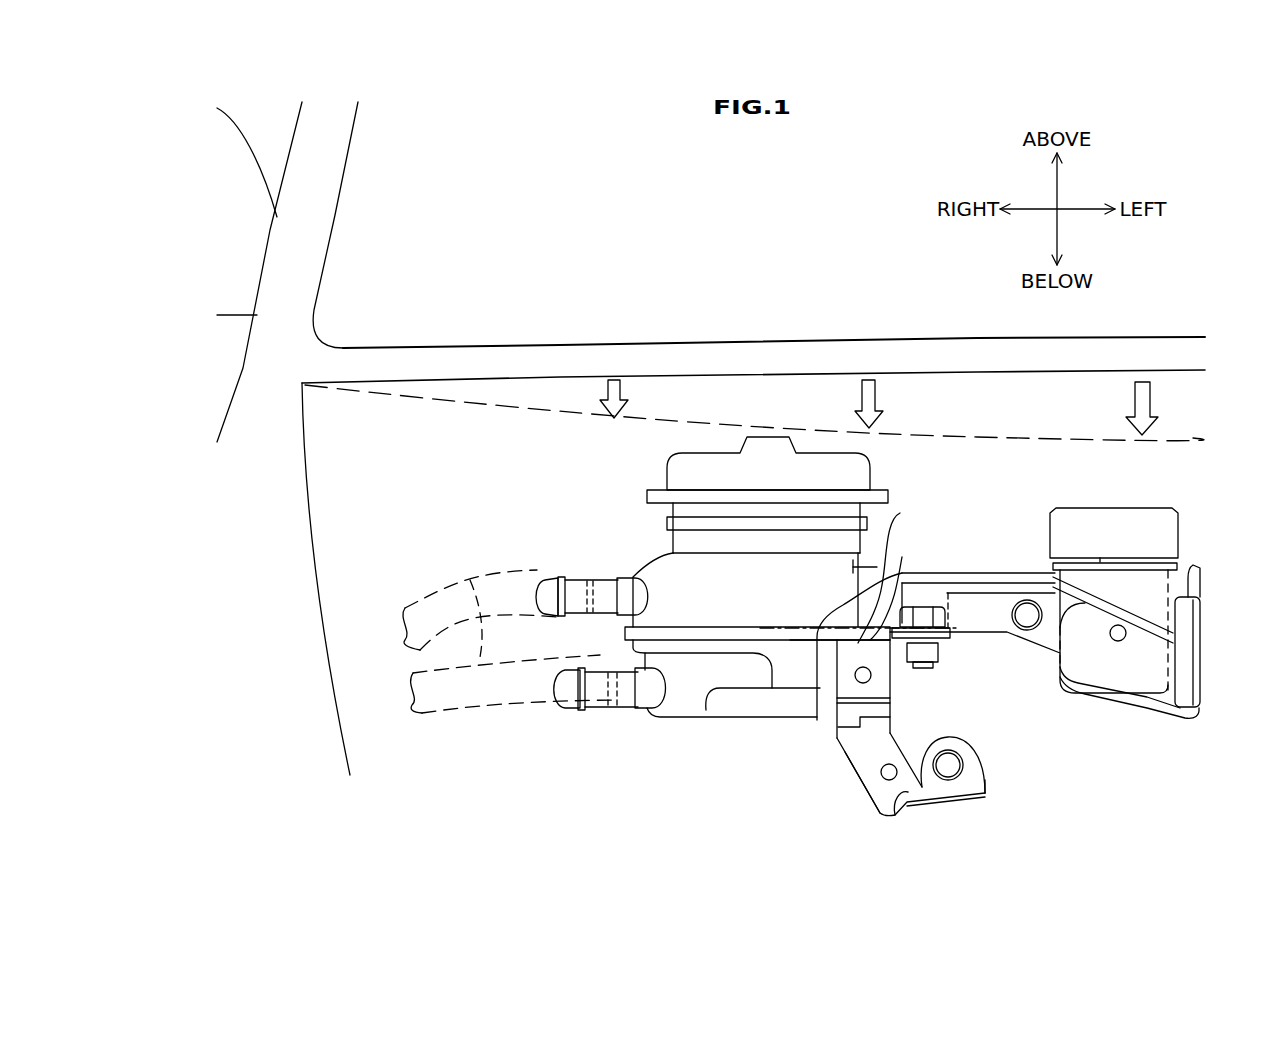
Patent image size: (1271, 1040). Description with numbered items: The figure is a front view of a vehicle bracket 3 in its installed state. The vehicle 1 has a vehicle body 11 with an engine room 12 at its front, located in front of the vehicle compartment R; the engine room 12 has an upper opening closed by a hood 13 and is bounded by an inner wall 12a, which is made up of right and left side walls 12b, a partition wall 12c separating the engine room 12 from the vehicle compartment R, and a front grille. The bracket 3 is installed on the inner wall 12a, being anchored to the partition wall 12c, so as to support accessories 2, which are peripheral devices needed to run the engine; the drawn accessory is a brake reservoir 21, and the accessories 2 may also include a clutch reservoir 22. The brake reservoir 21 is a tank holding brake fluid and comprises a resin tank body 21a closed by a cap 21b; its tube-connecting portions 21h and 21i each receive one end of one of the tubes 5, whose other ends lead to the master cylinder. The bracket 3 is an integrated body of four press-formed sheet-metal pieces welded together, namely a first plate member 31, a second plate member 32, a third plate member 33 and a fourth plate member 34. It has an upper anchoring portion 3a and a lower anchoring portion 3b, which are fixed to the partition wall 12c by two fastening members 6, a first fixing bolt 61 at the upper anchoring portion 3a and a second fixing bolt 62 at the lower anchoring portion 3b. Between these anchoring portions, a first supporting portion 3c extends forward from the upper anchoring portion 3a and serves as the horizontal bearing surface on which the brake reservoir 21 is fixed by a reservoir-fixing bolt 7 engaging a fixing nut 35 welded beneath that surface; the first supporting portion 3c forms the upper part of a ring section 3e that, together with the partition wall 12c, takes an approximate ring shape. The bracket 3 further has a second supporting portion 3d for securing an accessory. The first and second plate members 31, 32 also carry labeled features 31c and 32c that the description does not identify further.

The vehicle 1 is at (709, 429).
The vehicle body 11 is at (243, 370).
The engine room 12 is at (711, 516).
The inner wall 12a is at (711, 533).
The side walls 12b is at (305, 548).
The partition wall 12c is at (507, 397).
The hood 13 is at (705, 425).
The vehicle compartment R is at (655, 215).
The tubes 5 is at (510, 573).
The accessory or accessories 2 is at (829, 607).
The brake reservoir 21 is at (685, 607).
The tank body 21a is at (697, 583).
The cap 21b is at (677, 477).
The tube-connecting portion 21h is at (552, 585).
The tube-connecting portion 21i is at (565, 690).
The clutch reservoir 22 is at (1088, 503).
The bracket 3 is at (990, 606).
The upper anchoring portion 3a is at (893, 587).
The lower anchoring portion 3b is at (983, 777).
The first supporting portion 3c is at (892, 573).
The second supporting portion 3d is at (1088, 633).
The ring section 3e is at (860, 772).
The first plate member 31 is at (990, 642).
The first bracket hole 31c is at (833, 683).
The second plate member 32 is at (882, 782).
The second bracket hole 32c is at (857, 757).
The third plate member 33 is at (1187, 670).
The fourth plate member 34 is at (1203, 643).
The fixing nut 35 is at (920, 660).
The fastening members 6 is at (990, 690).
The first fixing bolt 61 is at (1027, 617).
The second fixing bolt 62 is at (950, 765).
The reservoir-fixing bolt 7 is at (940, 613).